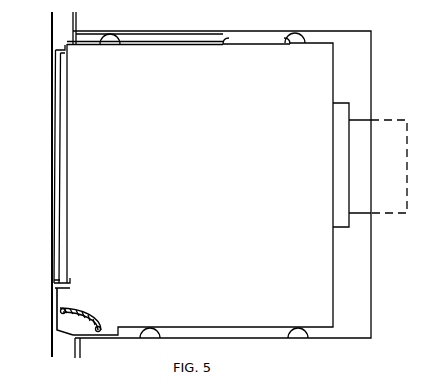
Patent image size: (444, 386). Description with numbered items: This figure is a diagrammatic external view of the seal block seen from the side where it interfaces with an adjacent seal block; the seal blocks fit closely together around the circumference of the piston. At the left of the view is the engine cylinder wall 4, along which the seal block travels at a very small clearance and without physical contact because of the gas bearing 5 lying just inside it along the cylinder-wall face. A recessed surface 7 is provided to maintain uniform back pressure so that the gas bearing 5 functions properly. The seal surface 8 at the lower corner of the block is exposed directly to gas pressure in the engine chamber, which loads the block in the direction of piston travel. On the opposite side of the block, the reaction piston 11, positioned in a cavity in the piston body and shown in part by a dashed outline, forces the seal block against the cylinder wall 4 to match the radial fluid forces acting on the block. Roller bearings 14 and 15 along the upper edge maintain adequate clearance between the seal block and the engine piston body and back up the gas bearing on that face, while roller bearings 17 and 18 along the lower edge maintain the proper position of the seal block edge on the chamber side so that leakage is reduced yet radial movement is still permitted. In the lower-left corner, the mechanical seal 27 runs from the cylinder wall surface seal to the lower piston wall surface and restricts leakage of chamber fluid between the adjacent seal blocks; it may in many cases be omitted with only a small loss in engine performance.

The engine cylinder wall 4 is at (51, 42).
The gas bearing 5 is at (55, 93).
The recessed surface 7 is at (72, 282).
The seal surface 8 is at (67, 333).
The reaction piston 11 is at (361, 119).
The roller bearing 14 is at (112, 36).
The roller bearing 15 is at (295, 35).
The roller bearing 17 is at (150, 339).
The roller bearing 18 is at (298, 340).
The mechanical seal 27 is at (83, 315).